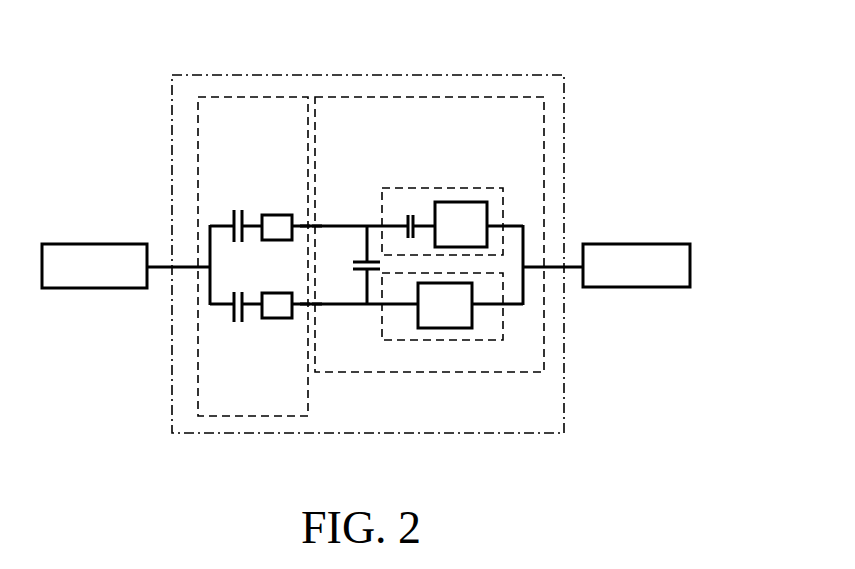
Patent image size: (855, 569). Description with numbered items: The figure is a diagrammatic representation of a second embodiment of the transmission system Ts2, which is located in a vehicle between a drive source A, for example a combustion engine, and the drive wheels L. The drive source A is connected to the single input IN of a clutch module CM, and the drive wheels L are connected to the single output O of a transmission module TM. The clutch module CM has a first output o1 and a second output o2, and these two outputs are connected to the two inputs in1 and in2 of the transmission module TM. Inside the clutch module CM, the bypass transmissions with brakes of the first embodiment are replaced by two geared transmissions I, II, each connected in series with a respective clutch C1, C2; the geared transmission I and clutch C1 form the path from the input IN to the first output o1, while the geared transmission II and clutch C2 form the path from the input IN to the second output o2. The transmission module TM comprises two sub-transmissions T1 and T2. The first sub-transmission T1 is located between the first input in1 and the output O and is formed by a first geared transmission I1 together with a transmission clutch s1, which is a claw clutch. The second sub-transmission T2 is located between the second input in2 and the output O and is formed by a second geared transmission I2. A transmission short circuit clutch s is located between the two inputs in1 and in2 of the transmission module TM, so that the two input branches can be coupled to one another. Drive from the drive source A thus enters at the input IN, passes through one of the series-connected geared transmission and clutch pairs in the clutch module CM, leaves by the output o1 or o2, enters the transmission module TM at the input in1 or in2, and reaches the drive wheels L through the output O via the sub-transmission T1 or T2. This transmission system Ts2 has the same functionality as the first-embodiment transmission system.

The transmission system Ts2 is at (172, 75).
The clutch module CM is at (215, 97).
The transmission module TM is at (492, 97).
The first sub-transmission T1 is at (494, 185).
The second sub-transmission T2 is at (493, 342).
The clutch C1 is at (238, 210).
The clutch C2 is at (238, 322).
The geared transmission I is at (277, 228).
The geared transmission II is at (277, 310).
The first output o1 is at (307, 225).
The second output o2 is at (307, 305).
The first input in1 is at (315, 223).
The second input in2 is at (315, 305).
The transmission short circuit clutch s is at (352, 266).
The transmission clutch s1 is at (412, 215).
The first geared transmission I1 is at (461, 218).
The second geared transmission I2 is at (444, 328).
The input IN is at (195, 269).
The output O is at (544, 267).
The drive source A is at (94, 268).
The drive wheels L is at (639, 271).